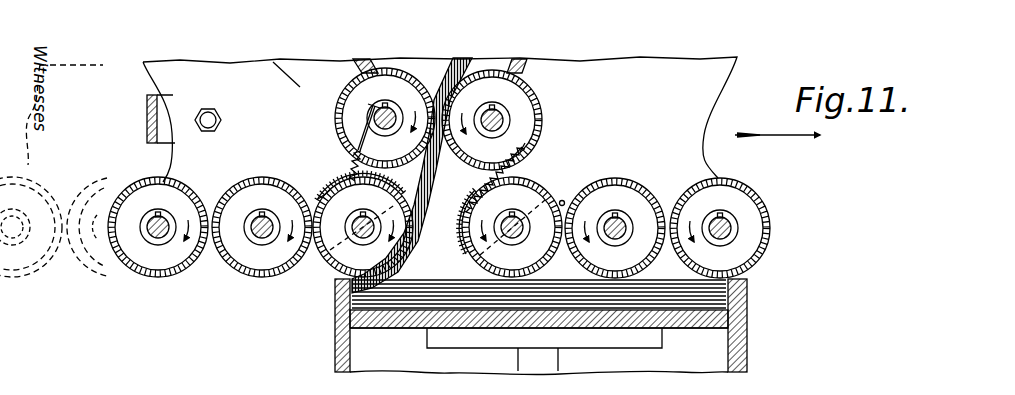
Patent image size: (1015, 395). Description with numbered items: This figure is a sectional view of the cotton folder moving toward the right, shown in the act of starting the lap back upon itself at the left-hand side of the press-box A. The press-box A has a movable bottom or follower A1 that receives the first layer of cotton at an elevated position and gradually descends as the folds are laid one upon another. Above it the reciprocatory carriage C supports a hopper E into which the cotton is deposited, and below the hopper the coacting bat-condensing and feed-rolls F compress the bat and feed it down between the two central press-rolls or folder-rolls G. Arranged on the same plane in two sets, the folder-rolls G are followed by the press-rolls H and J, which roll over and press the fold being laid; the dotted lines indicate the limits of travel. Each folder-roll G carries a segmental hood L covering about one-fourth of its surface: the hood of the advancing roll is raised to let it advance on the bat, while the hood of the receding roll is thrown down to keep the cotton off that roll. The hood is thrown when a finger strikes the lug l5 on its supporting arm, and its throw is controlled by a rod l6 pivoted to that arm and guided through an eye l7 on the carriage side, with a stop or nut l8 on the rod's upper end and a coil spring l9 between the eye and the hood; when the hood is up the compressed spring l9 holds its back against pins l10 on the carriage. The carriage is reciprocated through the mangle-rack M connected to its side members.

The press-box A is at (372, 348).
The follower A1 is at (730, 318).
The carriage C is at (440, 119).
The hopper E is at (517, 63).
The bat-condensing and feed-rolls F is at (522, 102).
The central press-rolls or folder-rolls G is at (525, 200).
The press-rolls H is at (622, 195).
The press-rolls J is at (740, 198).
The segmental hood L is at (467, 192).
The mangle-rack M is at (148, 118).
The lug l5 is at (316, 198).
The rod l6 is at (530, 142).
The eye l7 is at (520, 167).
The stop or nut l8 is at (525, 150).
The coil spring l9 is at (512, 172).
The pins l10 is at (563, 202).